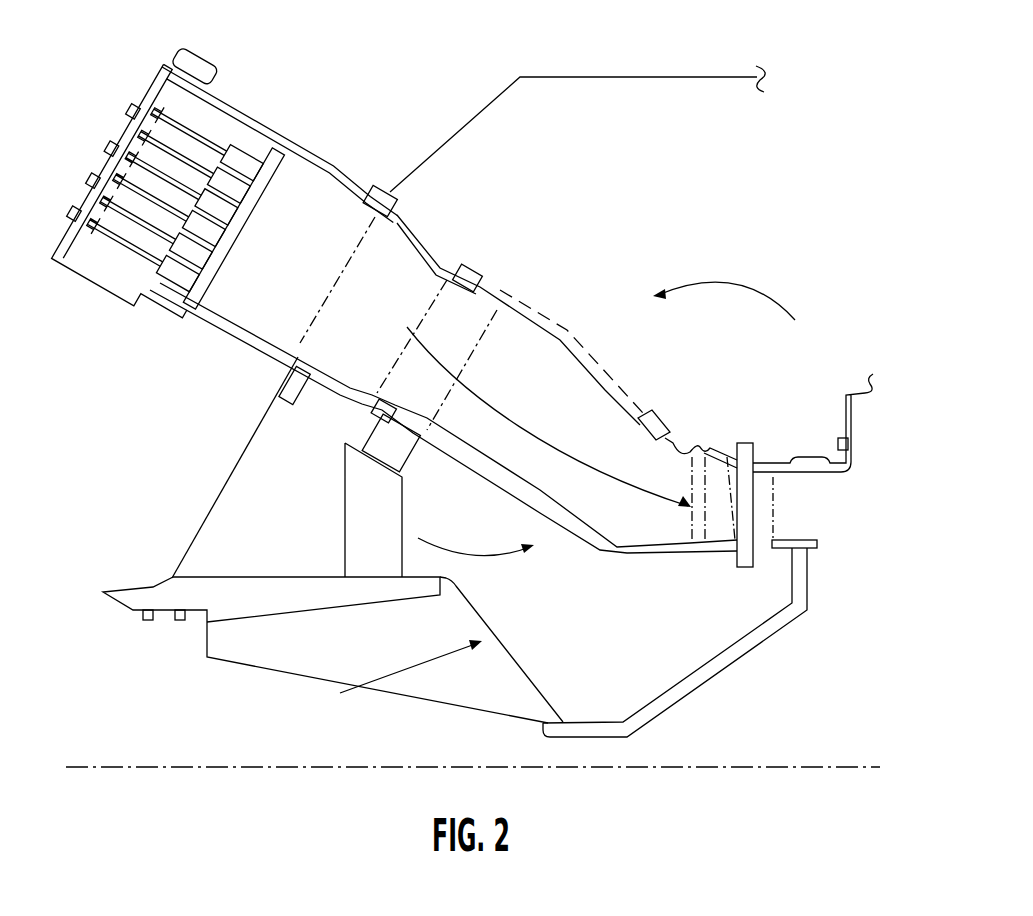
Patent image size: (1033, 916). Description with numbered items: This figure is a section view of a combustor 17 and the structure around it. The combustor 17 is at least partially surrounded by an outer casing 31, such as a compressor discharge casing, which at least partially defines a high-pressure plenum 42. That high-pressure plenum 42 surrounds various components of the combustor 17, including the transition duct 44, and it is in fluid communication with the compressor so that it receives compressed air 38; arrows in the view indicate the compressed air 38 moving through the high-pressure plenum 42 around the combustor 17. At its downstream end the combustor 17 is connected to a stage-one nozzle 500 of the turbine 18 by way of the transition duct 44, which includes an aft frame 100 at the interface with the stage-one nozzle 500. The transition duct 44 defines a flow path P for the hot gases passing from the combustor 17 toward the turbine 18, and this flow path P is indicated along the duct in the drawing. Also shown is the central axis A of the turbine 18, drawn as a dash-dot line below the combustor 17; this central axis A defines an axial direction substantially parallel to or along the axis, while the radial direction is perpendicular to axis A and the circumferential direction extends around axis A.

The combustor 17 is at (226, 373).
The outer casing 31 is at (628, 76).
The high-pressure plenum 42 is at (718, 186).
The transition duct 44 is at (612, 316).
The compressed air 38 is at (737, 284).
The flow path P is at (513, 413).
The aft frame 100 is at (745, 568).
The stage-one nozzle 500 is at (783, 463).
The turbine 18 is at (812, 527).
The central axis A is at (375, 770).